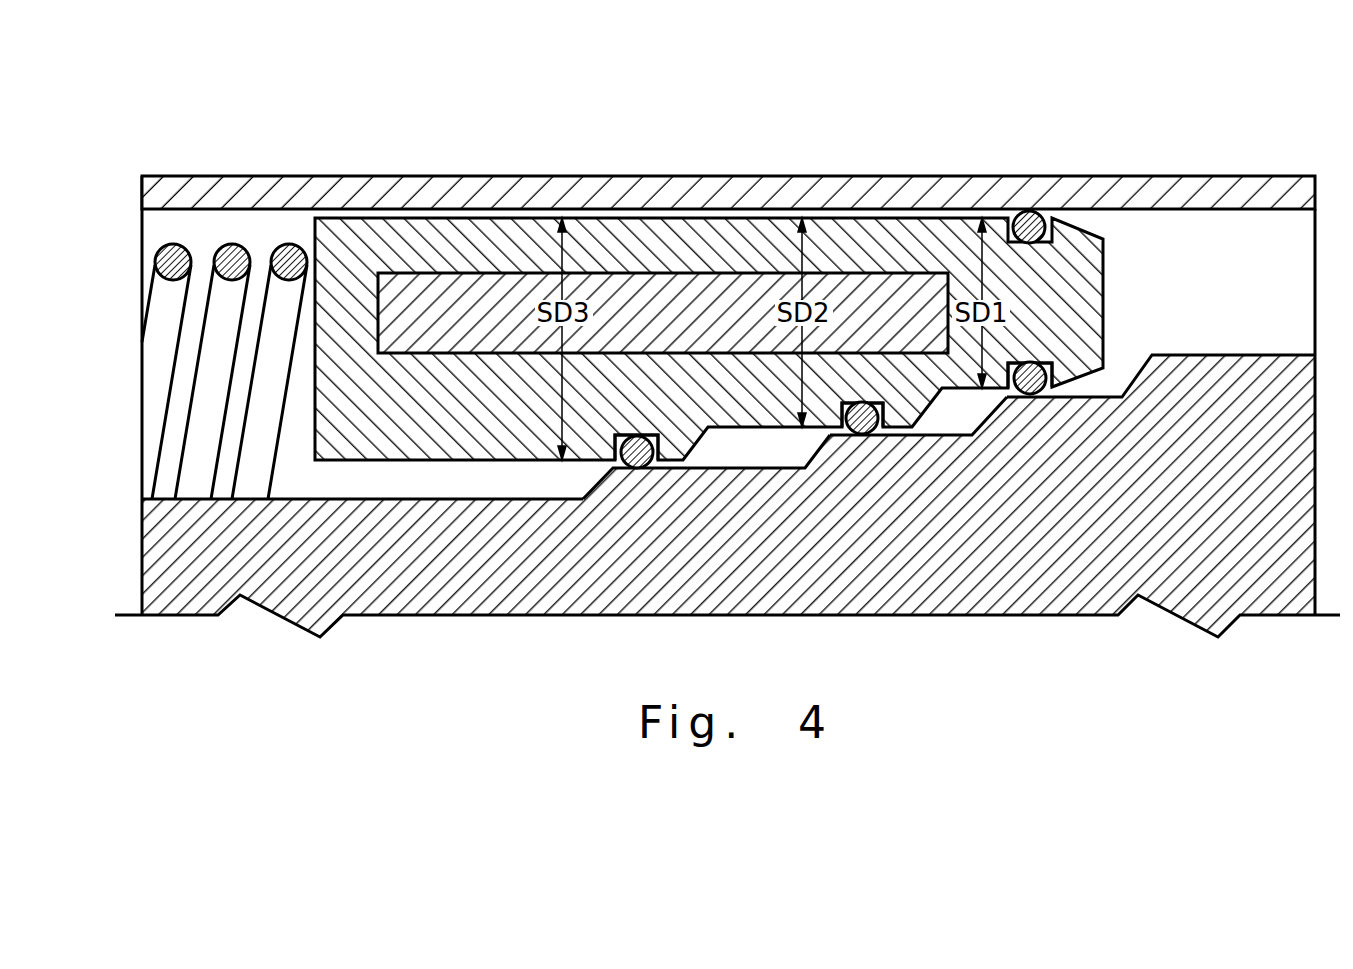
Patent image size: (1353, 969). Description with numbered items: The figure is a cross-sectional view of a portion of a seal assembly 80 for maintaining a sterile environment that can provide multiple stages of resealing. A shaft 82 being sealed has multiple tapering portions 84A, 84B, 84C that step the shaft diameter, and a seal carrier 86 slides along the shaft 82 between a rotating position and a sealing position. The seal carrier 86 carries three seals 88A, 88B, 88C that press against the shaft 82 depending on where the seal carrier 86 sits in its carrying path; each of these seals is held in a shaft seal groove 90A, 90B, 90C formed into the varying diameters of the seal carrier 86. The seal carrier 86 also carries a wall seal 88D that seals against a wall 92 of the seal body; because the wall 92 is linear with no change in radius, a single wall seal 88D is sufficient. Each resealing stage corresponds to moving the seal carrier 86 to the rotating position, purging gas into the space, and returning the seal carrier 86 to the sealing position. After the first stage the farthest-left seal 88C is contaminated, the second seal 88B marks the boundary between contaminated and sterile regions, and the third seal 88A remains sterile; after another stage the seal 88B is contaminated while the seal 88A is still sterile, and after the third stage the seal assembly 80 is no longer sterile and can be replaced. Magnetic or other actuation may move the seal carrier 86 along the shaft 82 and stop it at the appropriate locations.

The seal assembly 80 is at (958, 132).
The shaft 82 is at (340, 498).
The tapering portion 84A is at (1137, 370).
The tapering portion 84B is at (993, 418).
The tapering portion 84C is at (817, 462).
The seal carrier 86 is at (678, 240).
The seal 88A is at (1032, 385).
The seal 88B is at (863, 425).
The seal 88C is at (638, 458).
The wall seal 88D is at (1029, 225).
The shaft seal groove 90A is at (1045, 360).
The shaft seal groove 90B is at (875, 400).
The shaft seal groove 90C is at (651, 433).
The wall 92 is at (1093, 208).